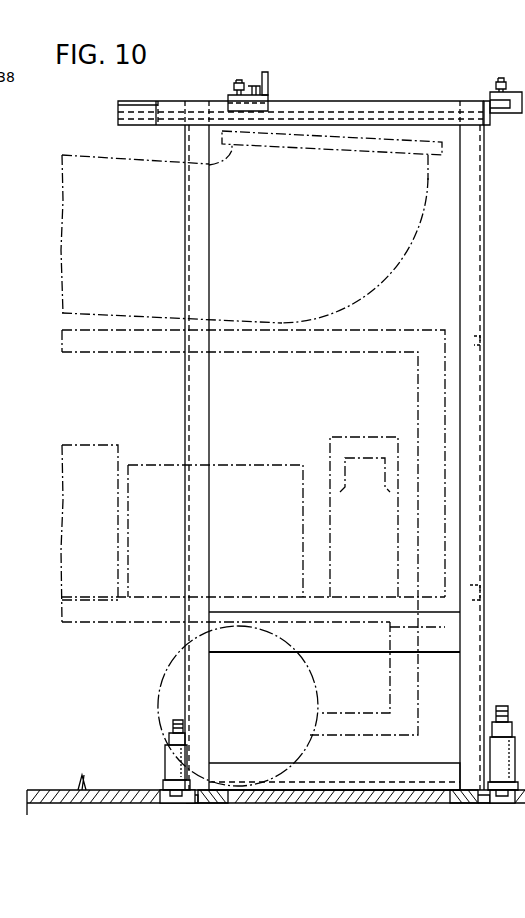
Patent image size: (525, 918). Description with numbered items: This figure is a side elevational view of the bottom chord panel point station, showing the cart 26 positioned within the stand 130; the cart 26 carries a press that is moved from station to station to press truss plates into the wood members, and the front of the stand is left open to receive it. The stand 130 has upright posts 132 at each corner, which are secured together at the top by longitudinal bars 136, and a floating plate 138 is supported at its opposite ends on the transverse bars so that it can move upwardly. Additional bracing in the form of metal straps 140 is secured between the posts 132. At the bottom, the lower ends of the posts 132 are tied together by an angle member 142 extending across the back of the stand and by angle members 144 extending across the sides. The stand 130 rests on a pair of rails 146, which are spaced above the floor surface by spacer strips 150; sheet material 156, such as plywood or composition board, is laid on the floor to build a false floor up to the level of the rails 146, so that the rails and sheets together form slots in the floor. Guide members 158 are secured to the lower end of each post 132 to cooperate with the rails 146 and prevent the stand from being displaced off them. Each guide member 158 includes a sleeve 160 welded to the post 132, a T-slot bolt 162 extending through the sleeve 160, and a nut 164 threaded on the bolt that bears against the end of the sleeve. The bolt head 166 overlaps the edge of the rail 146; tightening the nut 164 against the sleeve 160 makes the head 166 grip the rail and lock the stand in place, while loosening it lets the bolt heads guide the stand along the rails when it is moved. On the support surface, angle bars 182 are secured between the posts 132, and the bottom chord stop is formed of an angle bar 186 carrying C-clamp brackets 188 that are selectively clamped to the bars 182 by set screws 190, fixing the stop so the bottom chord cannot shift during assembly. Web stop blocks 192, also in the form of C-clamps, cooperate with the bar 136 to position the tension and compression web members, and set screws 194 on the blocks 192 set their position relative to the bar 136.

The cart 26 is at (128, 358).
The bottom chord panel point stand 130 is at (182, 417).
The upright posts 132 is at (197, 256).
The longitudinal bars 136 is at (170, 110).
The floating plate 138 is at (427, 90).
The metal straps 140 is at (475, 340).
The angle member 142 is at (474, 762).
The angle members 144 is at (246, 770).
The rails 146 is at (197, 804).
The spacer strips 150 is at (222, 805).
The sheet material 156 is at (86, 792).
The guide members 158 is at (163, 775).
The sleeve 160 is at (168, 768).
The T-slot bolt 162 is at (178, 720).
The nut 164 is at (170, 739).
The bolt head 166 is at (182, 804).
The angle bars 182 is at (371, 90).
The angle bar 186 is at (268, 76).
The C-clamp brackets 188 is at (270, 97).
The set screws 190 is at (240, 82).
The web stop blocks 192 is at (518, 113).
The set screws 194 is at (502, 80).